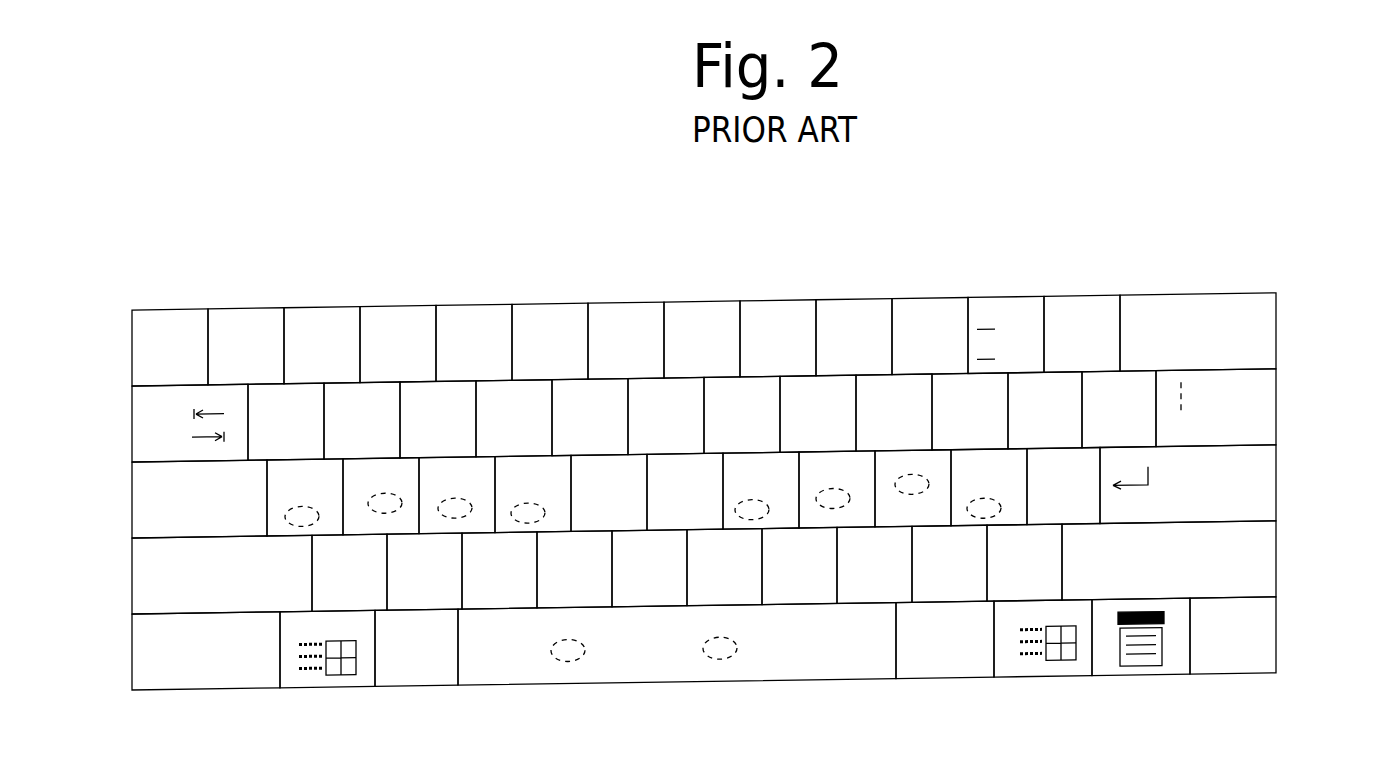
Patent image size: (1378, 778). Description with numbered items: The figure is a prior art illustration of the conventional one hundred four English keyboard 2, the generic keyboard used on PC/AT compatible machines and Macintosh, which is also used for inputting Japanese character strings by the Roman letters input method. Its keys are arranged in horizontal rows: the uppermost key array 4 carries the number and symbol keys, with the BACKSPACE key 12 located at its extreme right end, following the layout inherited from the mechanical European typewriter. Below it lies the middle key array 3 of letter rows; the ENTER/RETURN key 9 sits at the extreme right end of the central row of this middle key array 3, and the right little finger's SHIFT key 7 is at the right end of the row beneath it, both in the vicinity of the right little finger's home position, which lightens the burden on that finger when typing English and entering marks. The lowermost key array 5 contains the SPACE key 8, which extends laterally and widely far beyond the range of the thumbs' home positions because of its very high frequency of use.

The 104 English keyboard 2 is at (683, 286).
The middle key array 3 is at (104, 400).
The uppermost key array 4 is at (104, 313).
The lowermost key array 5 is at (108, 622).
The right little finger's SHIFT key 7 is at (1240, 574).
The SPACE key 8 is at (678, 669).
The ENTER/RETURN key 9 is at (1238, 485).
The BACKSPACE key 12 is at (1262, 310).